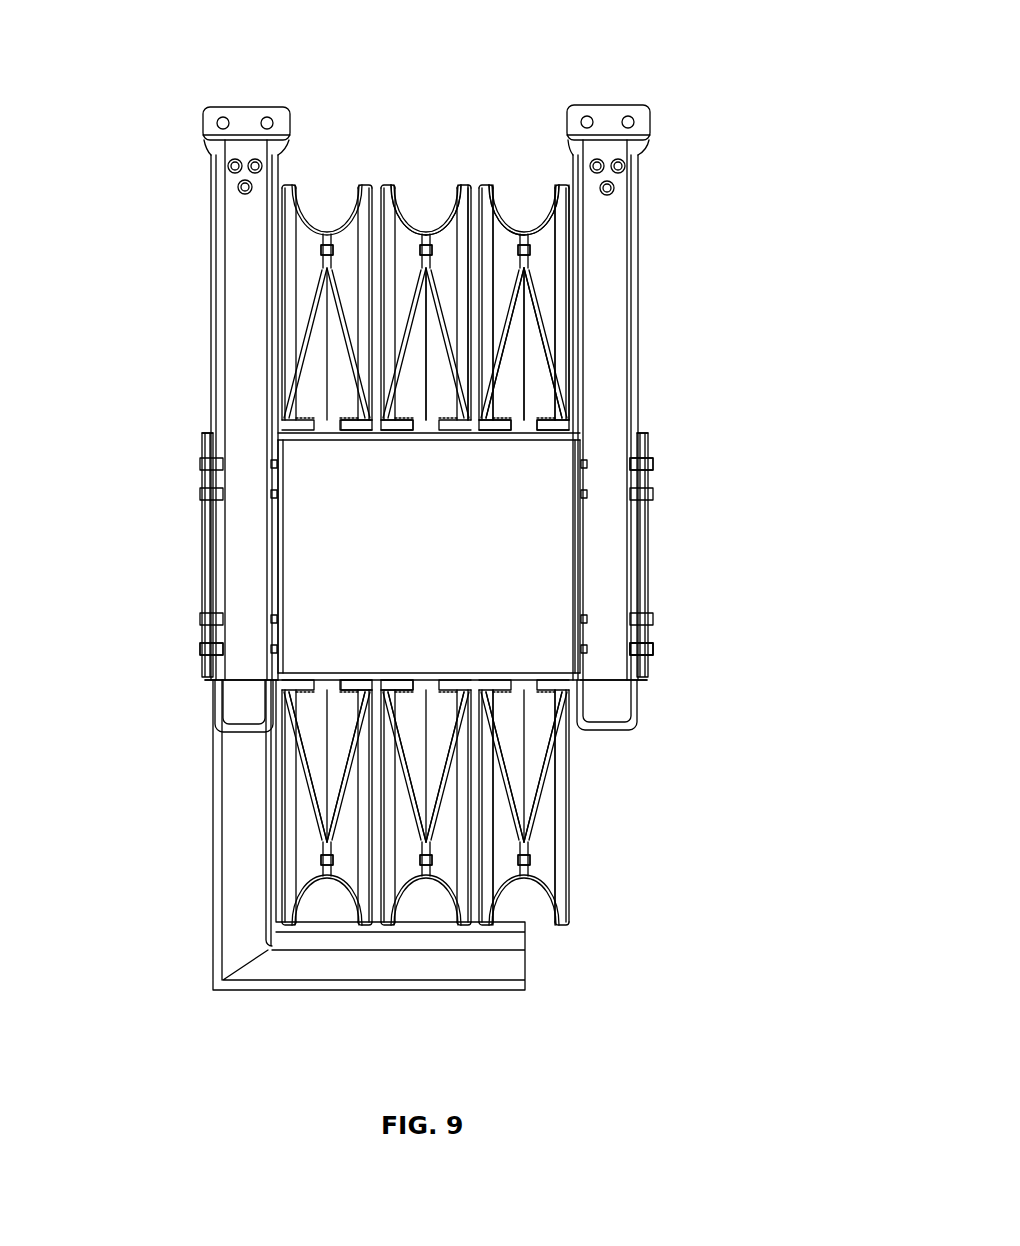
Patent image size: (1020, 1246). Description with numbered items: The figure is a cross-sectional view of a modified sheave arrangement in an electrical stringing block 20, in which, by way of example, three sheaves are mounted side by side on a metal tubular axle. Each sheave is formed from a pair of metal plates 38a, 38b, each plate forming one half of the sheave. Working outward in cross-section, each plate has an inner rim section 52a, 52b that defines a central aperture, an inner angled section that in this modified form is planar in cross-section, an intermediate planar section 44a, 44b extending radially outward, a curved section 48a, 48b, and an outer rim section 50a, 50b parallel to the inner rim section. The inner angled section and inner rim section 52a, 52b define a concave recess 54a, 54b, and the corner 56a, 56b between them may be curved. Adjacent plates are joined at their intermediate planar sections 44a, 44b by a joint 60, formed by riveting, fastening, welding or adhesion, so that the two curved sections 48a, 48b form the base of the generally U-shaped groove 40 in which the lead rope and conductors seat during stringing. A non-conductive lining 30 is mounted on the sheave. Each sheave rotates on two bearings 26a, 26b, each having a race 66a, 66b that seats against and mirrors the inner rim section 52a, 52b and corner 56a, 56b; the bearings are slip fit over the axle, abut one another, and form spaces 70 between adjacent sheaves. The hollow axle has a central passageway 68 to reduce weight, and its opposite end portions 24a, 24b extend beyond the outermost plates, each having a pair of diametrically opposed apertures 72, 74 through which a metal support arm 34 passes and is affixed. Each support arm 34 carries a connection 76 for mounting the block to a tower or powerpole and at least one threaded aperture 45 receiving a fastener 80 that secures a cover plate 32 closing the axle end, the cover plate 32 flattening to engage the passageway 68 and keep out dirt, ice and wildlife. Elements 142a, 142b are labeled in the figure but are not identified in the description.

The electrical stringing block 20 is at (313, 200).
The end portion of axle 24a is at (213, 680).
The end portion of axle 24b is at (635, 680).
The bearing 26a is at (365, 437).
The bearing 26b is at (390, 440).
The non-conductive lining 30 is at (302, 203).
The cover plate 32 is at (208, 588).
The support arm 34 is at (607, 715).
The metal plate 38a is at (517, 810).
The metal plate 38b is at (558, 788).
The U-shaped groove 40 is at (531, 196).
The intermediate planar section 44a is at (422, 238).
The intermediate planar section 44b is at (545, 262).
The aperture 45 is at (633, 463).
The curved section 48a is at (456, 198).
The curved section 48b is at (560, 220).
The outer rim section 50a is at (470, 215).
The outer rim section 50b is at (585, 190).
The inner rim section 52a is at (523, 410).
The inner rim section 52b is at (545, 367).
The concave recess 54a is at (478, 408).
The concave recess 54b is at (506, 342).
The corner 56a is at (493, 415).
The corner 56b is at (546, 416).
The joint 60 is at (325, 250).
The race 66a is at (355, 690).
The race 66b is at (425, 690).
The central passageway 68 is at (545, 560).
The space 70 is at (473, 768).
The aperture 72 is at (215, 435).
The aperture 74 is at (212, 668).
The connection 76 is at (208, 118).
The fastener 80 is at (205, 493).
The first brace 142a is at (520, 322).
The second brace 142b is at (537, 300).